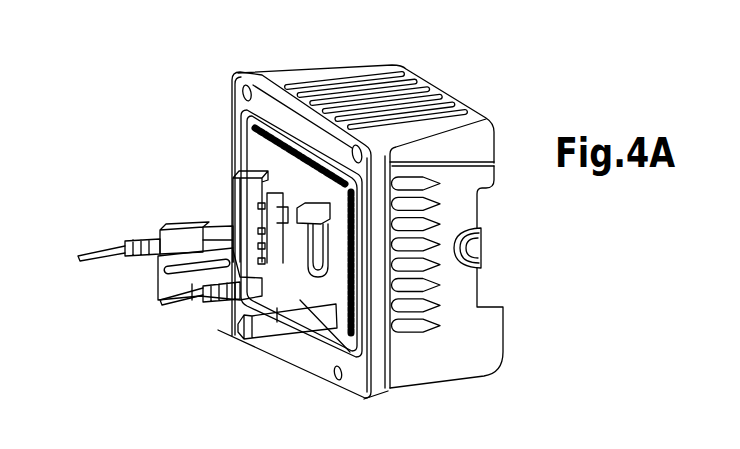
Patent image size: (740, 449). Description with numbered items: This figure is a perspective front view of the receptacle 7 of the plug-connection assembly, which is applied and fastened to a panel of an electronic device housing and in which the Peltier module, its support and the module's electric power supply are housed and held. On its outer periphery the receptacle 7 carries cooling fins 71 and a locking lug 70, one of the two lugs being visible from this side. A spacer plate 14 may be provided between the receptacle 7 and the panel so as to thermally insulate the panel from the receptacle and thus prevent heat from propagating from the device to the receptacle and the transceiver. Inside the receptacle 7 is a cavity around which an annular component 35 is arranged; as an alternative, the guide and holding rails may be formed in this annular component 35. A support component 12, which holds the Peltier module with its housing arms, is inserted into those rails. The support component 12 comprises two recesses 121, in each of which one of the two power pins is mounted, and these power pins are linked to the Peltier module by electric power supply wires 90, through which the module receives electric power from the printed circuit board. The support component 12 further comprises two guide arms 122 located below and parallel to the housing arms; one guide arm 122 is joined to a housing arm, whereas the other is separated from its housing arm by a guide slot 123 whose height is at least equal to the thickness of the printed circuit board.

The receptacle 7 is at (470, 130).
The support component 12 is at (340, 278).
The spacer plate 14 is at (287, 119).
The annular component 35 is at (250, 140).
The locking lug 70 is at (474, 252).
The cooling fins 71 is at (379, 86).
The electric power supply wires 90 is at (114, 245).
The recess 121 is at (204, 227).
The guide arm 122 is at (192, 303).
The guide slot 123 is at (295, 335).